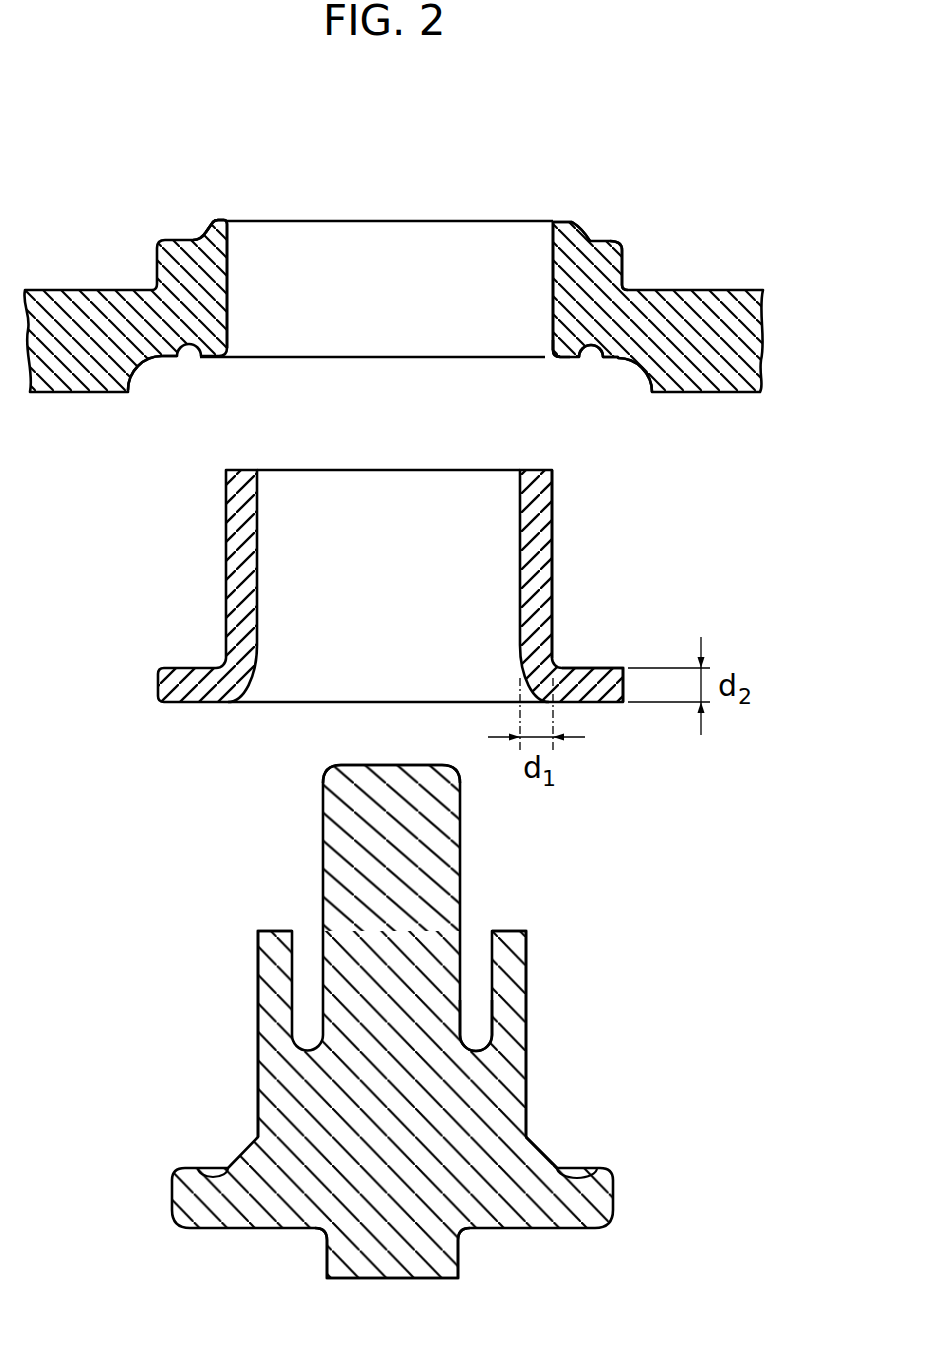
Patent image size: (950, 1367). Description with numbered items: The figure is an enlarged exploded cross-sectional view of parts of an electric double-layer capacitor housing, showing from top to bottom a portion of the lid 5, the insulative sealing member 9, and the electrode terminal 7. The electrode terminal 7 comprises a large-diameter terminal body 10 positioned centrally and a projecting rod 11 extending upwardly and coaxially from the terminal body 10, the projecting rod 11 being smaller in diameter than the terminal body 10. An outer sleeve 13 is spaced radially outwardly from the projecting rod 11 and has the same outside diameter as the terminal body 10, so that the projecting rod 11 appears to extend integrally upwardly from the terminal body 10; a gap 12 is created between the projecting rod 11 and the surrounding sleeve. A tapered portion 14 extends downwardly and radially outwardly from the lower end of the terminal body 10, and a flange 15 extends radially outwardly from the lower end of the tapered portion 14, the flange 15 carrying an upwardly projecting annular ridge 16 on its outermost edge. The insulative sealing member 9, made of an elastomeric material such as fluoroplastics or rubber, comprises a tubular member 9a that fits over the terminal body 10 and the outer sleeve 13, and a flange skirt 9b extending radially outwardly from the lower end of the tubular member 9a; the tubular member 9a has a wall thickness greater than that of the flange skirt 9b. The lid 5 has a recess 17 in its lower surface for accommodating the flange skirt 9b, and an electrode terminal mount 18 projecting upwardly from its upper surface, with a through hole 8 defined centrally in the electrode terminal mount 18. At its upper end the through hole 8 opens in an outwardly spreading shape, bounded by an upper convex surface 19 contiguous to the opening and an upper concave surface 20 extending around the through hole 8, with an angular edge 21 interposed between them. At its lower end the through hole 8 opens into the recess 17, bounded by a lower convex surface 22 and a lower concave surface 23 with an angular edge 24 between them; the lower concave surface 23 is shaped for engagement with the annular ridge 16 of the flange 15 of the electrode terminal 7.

The lid 5 is at (682, 290).
The electrode terminal 7 is at (628, 940).
The through hole 8 is at (227, 263).
The insulative sealing member 9 is at (648, 570).
The tubular member 9a is at (552, 532).
The flange skirt 9b is at (597, 668).
The terminal body 10 is at (258, 1060).
The projecting rod 11 is at (460, 812).
The gap 12 is at (472, 958).
The outer sleeve 13 is at (528, 1003).
The tapered portion 14 is at (537, 1153).
The flange 15 is at (538, 1229).
The annular ridge 16 is at (587, 1175).
The recess 17 is at (626, 379).
The electrode terminal mount 18 is at (636, 233).
The upper convex surface 19 is at (553, 222).
The upper concave surface 20 is at (577, 227).
The angular edge 21 is at (209, 204).
The lower convex surface 22 is at (551, 354).
The lower concave surface 23 is at (582, 358).
The angular edge 24 is at (191, 366).